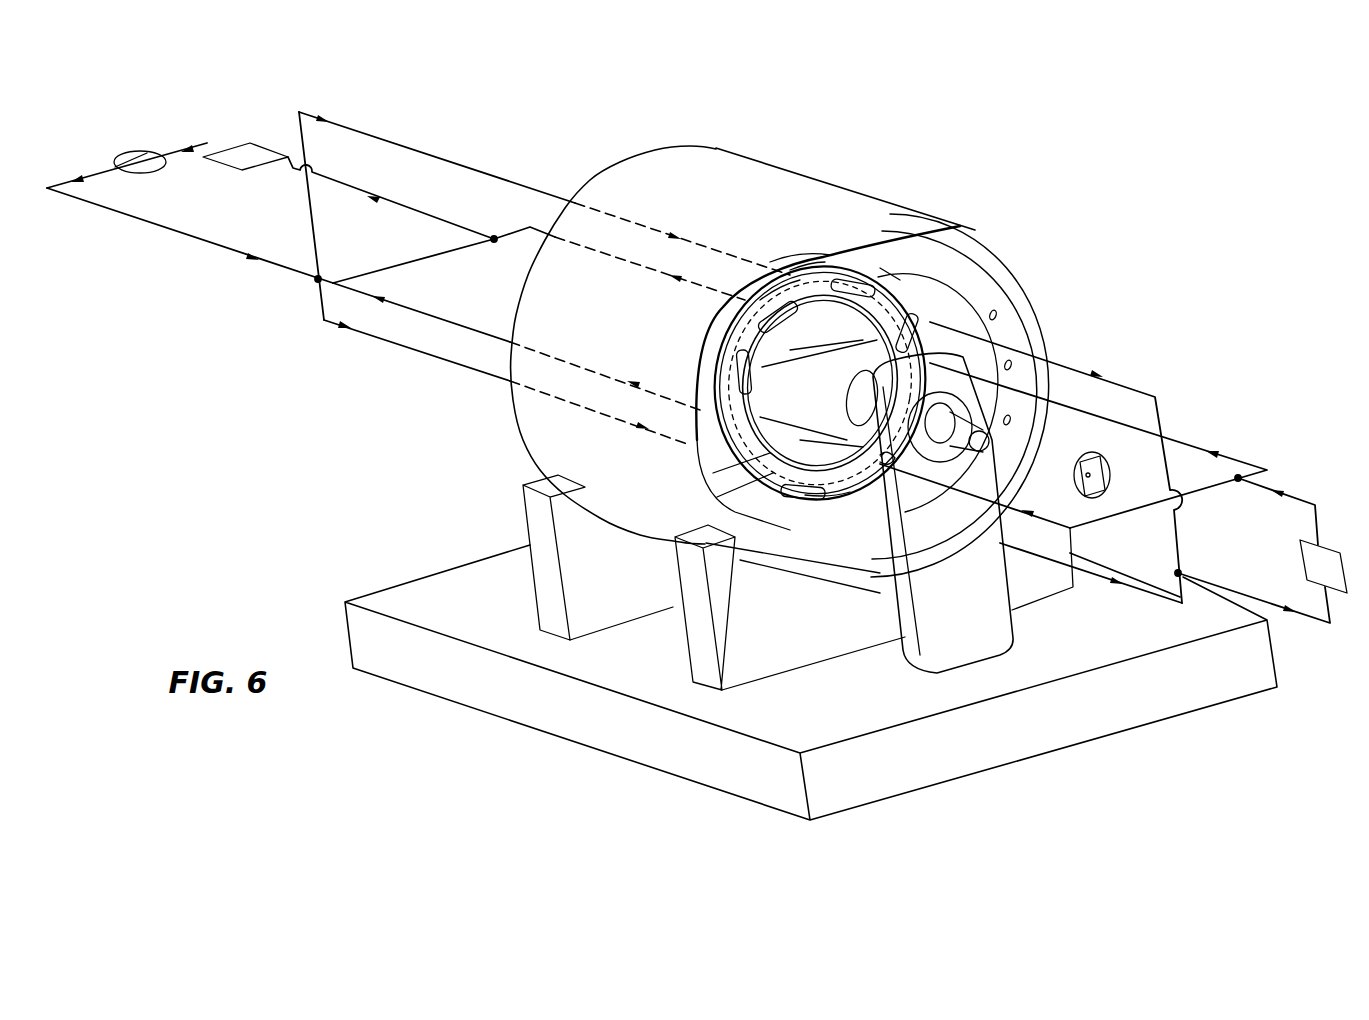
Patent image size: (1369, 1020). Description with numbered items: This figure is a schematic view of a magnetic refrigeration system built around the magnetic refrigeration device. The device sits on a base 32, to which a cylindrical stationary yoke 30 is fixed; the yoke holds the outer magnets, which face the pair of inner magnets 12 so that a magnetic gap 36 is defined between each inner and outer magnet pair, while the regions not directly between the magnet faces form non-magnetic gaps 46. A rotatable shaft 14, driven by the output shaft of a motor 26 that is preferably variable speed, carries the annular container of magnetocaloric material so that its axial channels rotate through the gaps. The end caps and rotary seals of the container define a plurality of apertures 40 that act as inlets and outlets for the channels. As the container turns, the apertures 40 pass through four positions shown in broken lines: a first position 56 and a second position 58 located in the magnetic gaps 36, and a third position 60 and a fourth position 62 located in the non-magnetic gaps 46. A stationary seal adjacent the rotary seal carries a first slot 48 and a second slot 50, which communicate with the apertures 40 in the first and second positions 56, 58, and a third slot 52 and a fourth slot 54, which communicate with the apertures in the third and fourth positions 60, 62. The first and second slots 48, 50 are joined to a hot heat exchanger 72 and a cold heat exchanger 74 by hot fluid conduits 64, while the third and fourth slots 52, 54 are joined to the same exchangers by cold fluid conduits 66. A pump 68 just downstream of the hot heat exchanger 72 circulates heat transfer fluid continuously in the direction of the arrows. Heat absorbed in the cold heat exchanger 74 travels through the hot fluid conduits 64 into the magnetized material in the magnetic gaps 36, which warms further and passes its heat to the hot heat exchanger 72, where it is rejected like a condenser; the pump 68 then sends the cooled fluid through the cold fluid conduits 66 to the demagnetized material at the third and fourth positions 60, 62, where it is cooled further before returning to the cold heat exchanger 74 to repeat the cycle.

The inner magnet 12 is at (693, 447).
The rotatable shaft 14 is at (952, 400).
The motor 26 is at (1098, 450).
The stationary yoke 30 is at (853, 190).
The base 32 is at (455, 578).
The magnetic gap 36 is at (730, 388).
The apertures 40 is at (847, 287).
The non-magnetic gap 46 is at (783, 297).
The first slot 48 is at (700, 442).
The second slot 50 is at (878, 300).
The third slot 52 is at (813, 258).
The fourth slot 54 is at (887, 460).
The first position 56 is at (697, 450).
The second position 58 is at (873, 307).
The third position 60 is at (862, 255).
The fourth position 62 is at (813, 507).
The hot fluid conduits 64 is at (400, 207).
The cold fluid conduits 66 is at (160, 235).
The pump 68 is at (128, 152).
The hot heat exchanger 72 is at (236, 143).
The cold heat exchanger 74 is at (1335, 555).